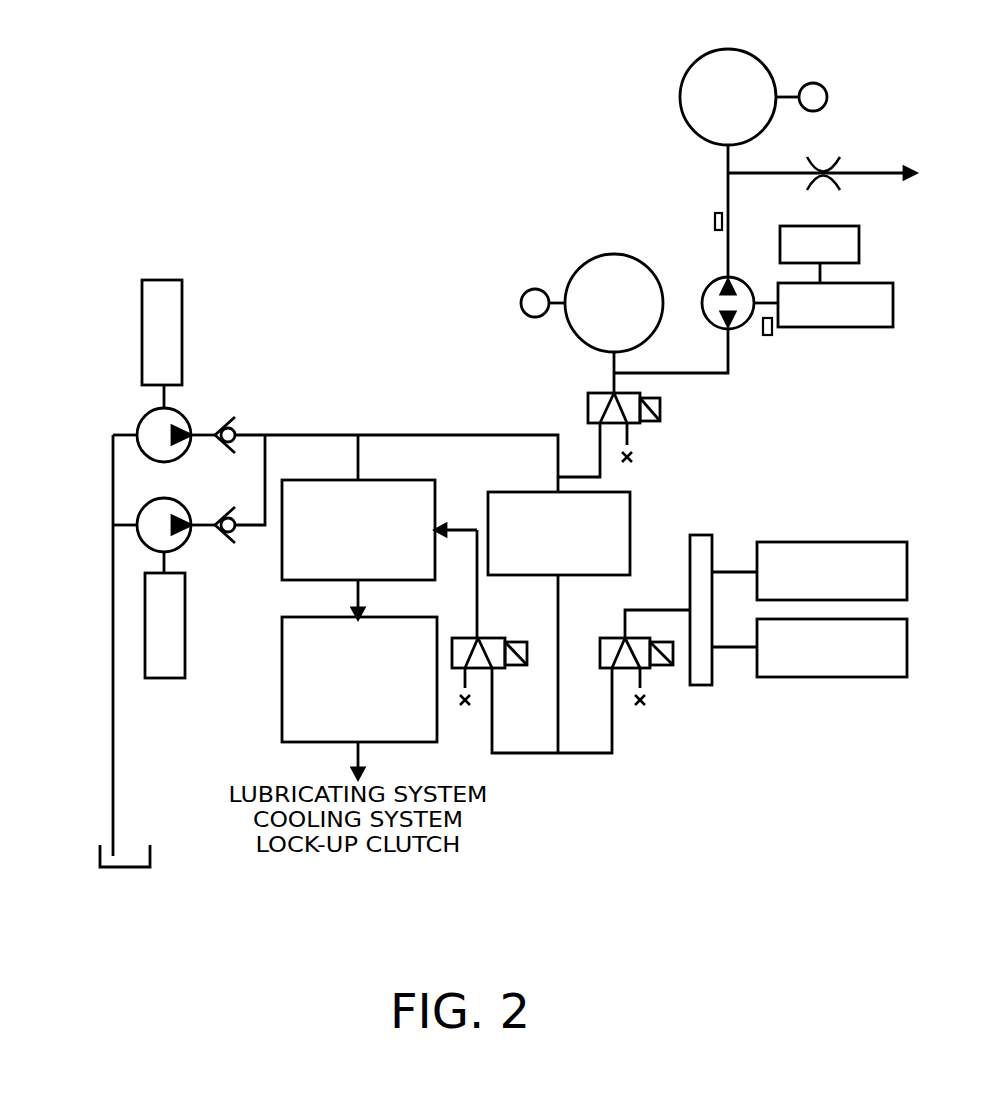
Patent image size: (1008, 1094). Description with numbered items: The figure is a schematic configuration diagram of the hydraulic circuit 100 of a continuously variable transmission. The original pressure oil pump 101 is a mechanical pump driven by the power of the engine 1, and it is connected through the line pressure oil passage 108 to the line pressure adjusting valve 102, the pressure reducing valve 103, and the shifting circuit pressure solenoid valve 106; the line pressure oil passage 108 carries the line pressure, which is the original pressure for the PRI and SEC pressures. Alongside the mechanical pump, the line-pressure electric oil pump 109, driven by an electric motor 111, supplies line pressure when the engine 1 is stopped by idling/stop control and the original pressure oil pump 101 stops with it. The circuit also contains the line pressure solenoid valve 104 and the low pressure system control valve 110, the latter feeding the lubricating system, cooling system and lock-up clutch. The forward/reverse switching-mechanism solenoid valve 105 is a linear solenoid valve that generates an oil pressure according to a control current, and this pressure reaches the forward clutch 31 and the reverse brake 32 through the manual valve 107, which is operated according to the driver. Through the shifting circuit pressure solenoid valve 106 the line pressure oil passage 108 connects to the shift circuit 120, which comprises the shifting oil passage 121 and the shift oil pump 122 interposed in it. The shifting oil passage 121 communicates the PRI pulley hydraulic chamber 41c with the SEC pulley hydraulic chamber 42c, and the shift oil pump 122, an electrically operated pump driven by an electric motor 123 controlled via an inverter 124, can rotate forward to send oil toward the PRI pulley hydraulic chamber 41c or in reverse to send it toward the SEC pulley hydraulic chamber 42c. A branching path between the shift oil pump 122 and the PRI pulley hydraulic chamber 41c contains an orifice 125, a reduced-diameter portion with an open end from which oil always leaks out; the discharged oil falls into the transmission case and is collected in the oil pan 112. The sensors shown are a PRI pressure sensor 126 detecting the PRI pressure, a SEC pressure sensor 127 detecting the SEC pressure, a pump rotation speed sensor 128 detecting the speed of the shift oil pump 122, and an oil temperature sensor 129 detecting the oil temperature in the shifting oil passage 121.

The engine 1 is at (182, 318).
The forward clutch 31 is at (835, 542).
The reverse brake 32 is at (835, 677).
The PRI pulley hydraulic chamber 41c is at (695, 62).
The SEC pulley hydraulic chamber 42c is at (581, 268).
The hydraulic circuit 100 is at (88, 680).
The original pressure oil pump 101 is at (145, 416).
The line pressure adjusting valve 102 is at (418, 480).
The pressure reducing valve 103 is at (630, 513).
The line pressure solenoid valve 104 is at (478, 637).
The forward/reverse switching-mechanism solenoid valve 105 is at (622, 638).
The shifting circuit pressure solenoid valve 106 is at (597, 393).
The manual valve 107 is at (700, 685).
The line pressure oil passage 108 is at (453, 432).
The line-pressure electric oil pump 109 is at (184, 544).
The low pressure system control valve 110 is at (282, 693).
The electric motor 111 is at (185, 612).
The oil pan 112 is at (152, 858).
The shift circuit 120 is at (548, 157).
The shifting oil passage 121 is at (697, 373).
The shift oil pump 122 is at (707, 283).
The electric motor 123 is at (833, 327).
The inverter 124 is at (850, 226).
The orifice 125 is at (823, 157).
The PRI pressure sensor 126 is at (823, 86).
The SEC pressure sensor 127 is at (540, 289).
The pump rotation speed sensor 128 is at (768, 335).
The oil temperature sensor 129 is at (716, 213).